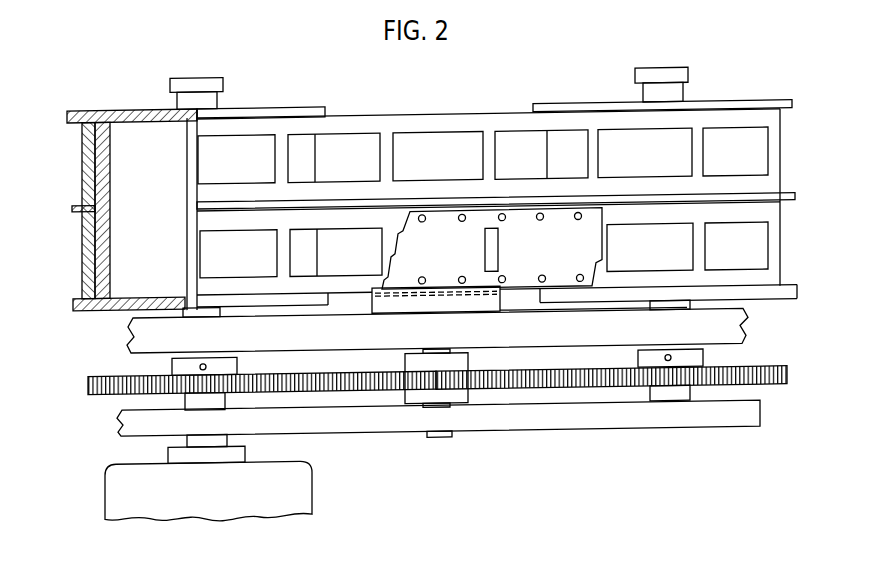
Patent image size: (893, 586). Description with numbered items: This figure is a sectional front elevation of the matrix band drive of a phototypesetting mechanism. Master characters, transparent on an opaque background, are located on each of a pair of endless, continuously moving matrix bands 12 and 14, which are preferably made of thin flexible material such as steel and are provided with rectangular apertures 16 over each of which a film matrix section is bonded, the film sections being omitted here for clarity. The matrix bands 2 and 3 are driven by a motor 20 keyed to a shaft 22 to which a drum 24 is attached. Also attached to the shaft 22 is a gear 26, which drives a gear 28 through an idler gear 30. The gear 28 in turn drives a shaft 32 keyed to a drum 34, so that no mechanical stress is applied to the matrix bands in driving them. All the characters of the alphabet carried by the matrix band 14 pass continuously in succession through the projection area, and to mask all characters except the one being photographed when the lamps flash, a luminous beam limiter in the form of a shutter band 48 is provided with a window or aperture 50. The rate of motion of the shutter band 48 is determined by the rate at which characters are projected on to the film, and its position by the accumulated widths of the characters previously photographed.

The matrix band 2 is at (81, 144).
The matrix band 3 is at (81, 269).
The drum 24 is at (111, 141).
The shaft 22 is at (187, 251).
The matrix band 12 is at (447, 113).
The rectangular apertures 16 is at (366, 176).
The drum 34 is at (548, 157).
The shutter band 48 is at (597, 265).
The window 50 is at (501, 248).
The matrix band 14 is at (350, 293).
The shaft 32 is at (648, 311).
The idler gear 30 is at (398, 371).
The gear 26 is at (88, 378).
The gear 28 is at (788, 382).
The motor 20 is at (313, 499).